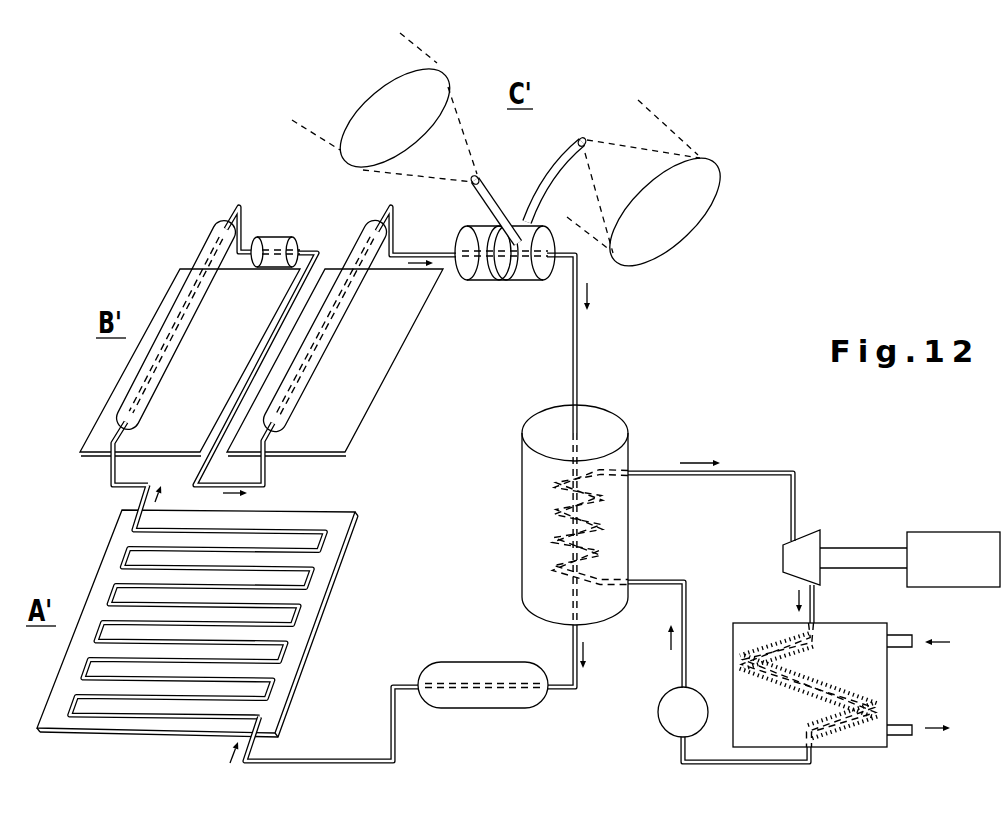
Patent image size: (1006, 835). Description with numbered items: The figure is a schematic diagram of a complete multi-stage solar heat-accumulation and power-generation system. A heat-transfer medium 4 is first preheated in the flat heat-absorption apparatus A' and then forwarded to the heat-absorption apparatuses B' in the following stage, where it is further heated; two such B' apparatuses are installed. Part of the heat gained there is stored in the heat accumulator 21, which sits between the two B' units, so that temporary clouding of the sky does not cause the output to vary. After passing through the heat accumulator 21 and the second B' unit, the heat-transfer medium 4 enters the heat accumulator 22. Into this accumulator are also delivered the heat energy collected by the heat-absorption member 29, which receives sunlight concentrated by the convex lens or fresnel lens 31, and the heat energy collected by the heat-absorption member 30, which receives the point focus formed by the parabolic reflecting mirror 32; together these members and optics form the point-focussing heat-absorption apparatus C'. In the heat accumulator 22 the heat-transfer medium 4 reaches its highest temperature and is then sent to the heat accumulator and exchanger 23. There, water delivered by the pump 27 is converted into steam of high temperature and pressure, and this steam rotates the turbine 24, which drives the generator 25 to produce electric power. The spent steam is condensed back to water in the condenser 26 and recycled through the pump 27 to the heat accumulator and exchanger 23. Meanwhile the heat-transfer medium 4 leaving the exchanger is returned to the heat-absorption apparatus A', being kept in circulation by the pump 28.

The heat-transfer medium 4 is at (335, 758).
The heat accumulator 21 is at (275, 238).
The heat accumulator 22 is at (518, 275).
The heat accumulator and exchanger 23 is at (535, 418).
The turbine 24 is at (808, 538).
The generator 25 is at (952, 538).
The condenser 26 is at (882, 677).
The pump 27 is at (667, 705).
The pump 28 is at (467, 667).
The heat-absorption member 29 is at (470, 182).
The heat-absorption member 30 is at (582, 137).
The convex lens or fresnel lens 31 is at (367, 108).
The parabolic reflecting mirror 32 is at (677, 232).